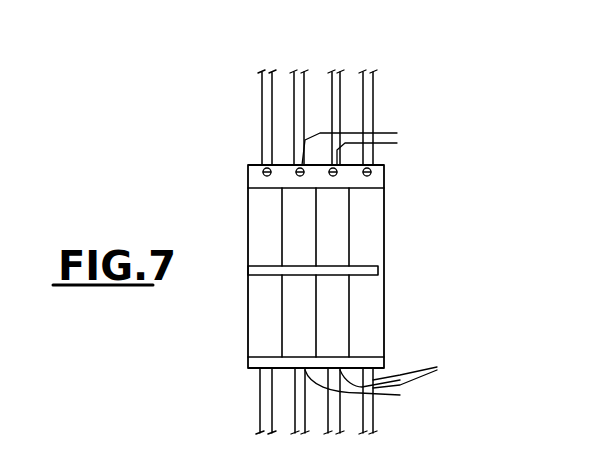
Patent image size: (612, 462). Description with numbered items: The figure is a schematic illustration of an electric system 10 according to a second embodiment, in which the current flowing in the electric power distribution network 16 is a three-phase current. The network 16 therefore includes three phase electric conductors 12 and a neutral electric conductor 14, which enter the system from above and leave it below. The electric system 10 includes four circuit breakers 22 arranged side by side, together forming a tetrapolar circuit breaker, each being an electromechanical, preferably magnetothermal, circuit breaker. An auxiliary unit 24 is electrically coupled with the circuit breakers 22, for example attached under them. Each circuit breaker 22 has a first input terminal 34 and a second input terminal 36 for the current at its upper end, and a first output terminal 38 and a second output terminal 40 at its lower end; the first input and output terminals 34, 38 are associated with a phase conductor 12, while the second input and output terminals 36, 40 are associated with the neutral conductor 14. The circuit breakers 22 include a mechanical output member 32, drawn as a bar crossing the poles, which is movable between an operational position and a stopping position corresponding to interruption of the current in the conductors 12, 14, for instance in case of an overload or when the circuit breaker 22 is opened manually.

The electric system 10 is at (445, 193).
The phase electric conductor 12 is at (373, 72).
The neutral electric conductor 14 is at (267, 72).
The electric power distribution network 16 is at (407, 100).
The electric circuit breaker 22 is at (272, 340).
The auxiliary unit 24 is at (383, 360).
The mechanical output member 32 is at (333, 268).
The first input terminal 34 is at (359, 147).
The second input terminal 36 is at (250, 175).
The first output terminal 38 is at (381, 375).
The second output terminal 40 is at (260, 370).